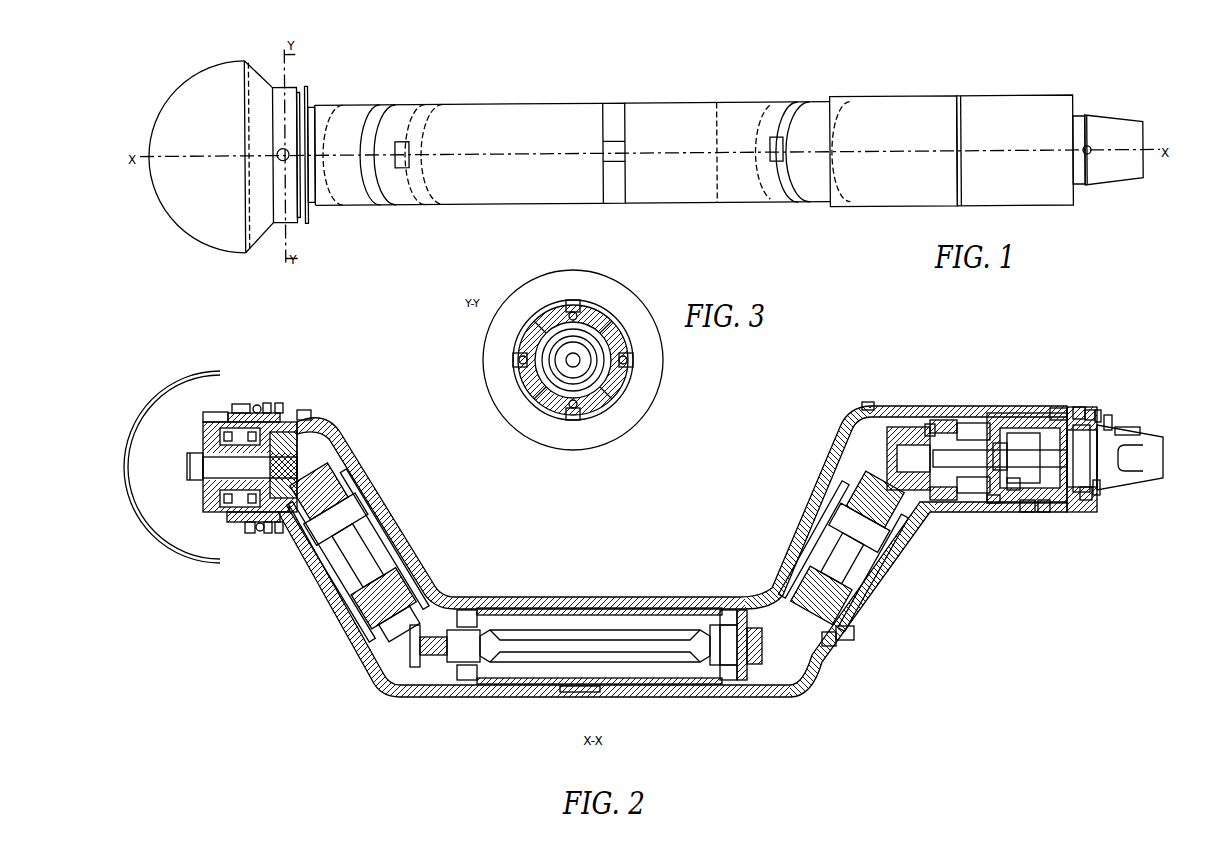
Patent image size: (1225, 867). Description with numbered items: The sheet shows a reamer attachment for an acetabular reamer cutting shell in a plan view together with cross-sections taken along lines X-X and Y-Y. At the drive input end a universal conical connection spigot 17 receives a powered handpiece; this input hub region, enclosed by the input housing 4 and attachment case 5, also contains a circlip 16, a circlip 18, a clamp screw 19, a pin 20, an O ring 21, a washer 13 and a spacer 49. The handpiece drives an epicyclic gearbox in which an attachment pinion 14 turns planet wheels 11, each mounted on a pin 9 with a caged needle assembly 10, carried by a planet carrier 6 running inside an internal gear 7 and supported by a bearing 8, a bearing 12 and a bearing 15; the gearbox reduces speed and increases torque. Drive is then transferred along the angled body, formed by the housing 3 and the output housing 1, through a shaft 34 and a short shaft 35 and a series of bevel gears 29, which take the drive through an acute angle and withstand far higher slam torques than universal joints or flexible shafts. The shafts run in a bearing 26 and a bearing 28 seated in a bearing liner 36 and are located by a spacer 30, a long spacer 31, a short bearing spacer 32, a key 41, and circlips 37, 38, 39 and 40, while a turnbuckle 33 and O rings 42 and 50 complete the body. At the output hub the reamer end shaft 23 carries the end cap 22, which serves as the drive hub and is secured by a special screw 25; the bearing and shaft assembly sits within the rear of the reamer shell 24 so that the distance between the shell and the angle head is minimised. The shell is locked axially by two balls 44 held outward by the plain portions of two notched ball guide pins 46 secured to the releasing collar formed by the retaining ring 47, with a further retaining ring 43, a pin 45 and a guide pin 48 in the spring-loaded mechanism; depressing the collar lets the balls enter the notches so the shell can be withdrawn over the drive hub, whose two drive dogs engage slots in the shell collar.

In FIG. 2, the output housing 1 is at (313, 437).
In FIG. 2, the housing 3 is at (847, 633).
In FIG. 2, the input housing 4 is at (897, 423).
In FIG. 2, the attachment case 5 is at (980, 412).
In FIG. 2, the planet carrier 6 is at (1030, 412).
In FIG. 2, the internal gear 7 is at (1043, 510).
In FIG. 2, the bearing 8 is at (993, 415).
In FIG. 2, the pin 9 is at (993, 508).
In FIG. 2, the caged needle assembly 10 is at (1013, 510).
In FIG. 2, the planet wheel 11 is at (1027, 512).
In FIG. 2, the bearing 12 is at (1054, 408).
In FIG. 2, the washer 13 is at (1068, 408).
In FIG. 2, the attachment pinion 14 is at (1127, 490).
In FIG. 2, the bearing 15 is at (1088, 412).
In FIG. 2, the circlip 16 is at (1080, 410).
In FIG. 2, the spigot 17 is at (1130, 428).
In FIG. 2, the circlip 18 is at (1087, 497).
In FIG. 2, the clamp screw 19 is at (1098, 413).
In FIG. 2, the pin 20 is at (1108, 418).
In FIG. 2, the O ring 21 is at (1097, 490).
In FIG. 2, the end cap 22 is at (262, 406).
In FIG. 2, the reamer end shaft 23 is at (300, 460).
In FIG. 2, the reamer shell 24 is at (153, 507).
In FIG. 2, the special screw 25 is at (188, 455).
In FIG. 2, the bearing 26 is at (230, 437).
In FIG. 2, the bearing 28 is at (728, 672).
In FIG. 2, the bevel gear 29 is at (833, 638).
In FIG. 2, the spacer 30 is at (775, 567).
In FIG. 2, the long spacer 31 is at (667, 595).
In FIG. 2, the short bearing spacer 32 is at (873, 573).
In FIG. 2, the turnbuckle 33 is at (597, 597).
In FIG. 2, the shaft 34 is at (528, 642).
In FIG. 2, the short shaft 35 is at (365, 565).
In FIG. 2, the bearing liner 36 is at (722, 605).
In FIG. 2, the circlip 37 is at (227, 507).
In FIG. 2, the circlip 38 is at (270, 405).
In FIG. 2, the circlip 39 is at (308, 413).
In FIG. 2, the circlip 40 is at (742, 665).
In FIG. 2, the key 41 is at (279, 533).
In FIG. 2, the O ring 42 is at (577, 693).
In FIG. 2, the retaining ring 43 is at (265, 530).
In FIG. 2, the ball 44 is at (257, 407).
In FIG. 3, the pin 45 is at (612, 310).
In FIG. 2, the ball guide pin 46 is at (243, 405).
In FIG. 2, the retaining ring 47 is at (280, 405).
In FIG. 3, the guide pin 48 is at (558, 298).
In FIG. 2, the spacer 49 is at (245, 533).
In FIG. 2, the O ring 50 is at (215, 410).